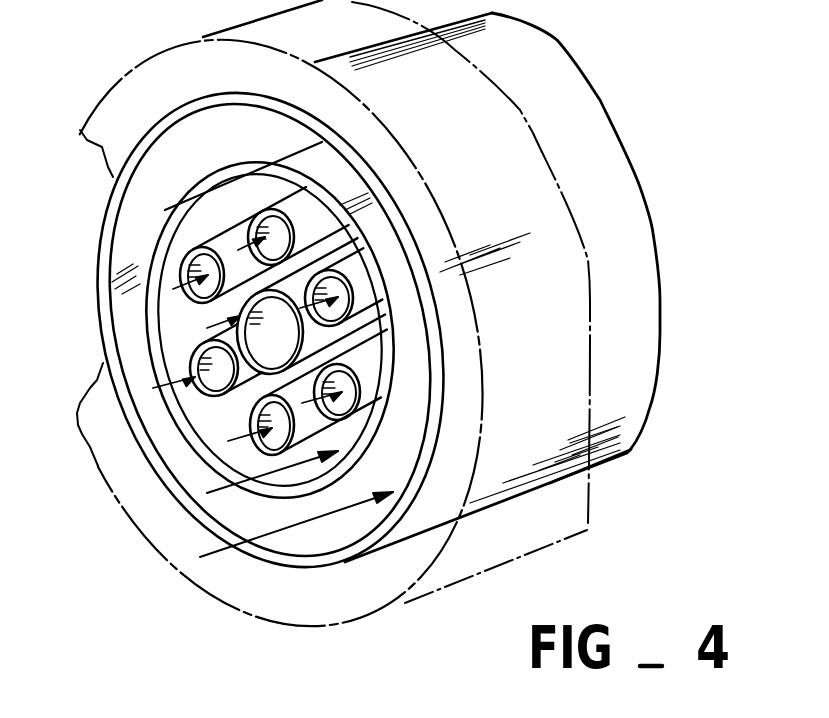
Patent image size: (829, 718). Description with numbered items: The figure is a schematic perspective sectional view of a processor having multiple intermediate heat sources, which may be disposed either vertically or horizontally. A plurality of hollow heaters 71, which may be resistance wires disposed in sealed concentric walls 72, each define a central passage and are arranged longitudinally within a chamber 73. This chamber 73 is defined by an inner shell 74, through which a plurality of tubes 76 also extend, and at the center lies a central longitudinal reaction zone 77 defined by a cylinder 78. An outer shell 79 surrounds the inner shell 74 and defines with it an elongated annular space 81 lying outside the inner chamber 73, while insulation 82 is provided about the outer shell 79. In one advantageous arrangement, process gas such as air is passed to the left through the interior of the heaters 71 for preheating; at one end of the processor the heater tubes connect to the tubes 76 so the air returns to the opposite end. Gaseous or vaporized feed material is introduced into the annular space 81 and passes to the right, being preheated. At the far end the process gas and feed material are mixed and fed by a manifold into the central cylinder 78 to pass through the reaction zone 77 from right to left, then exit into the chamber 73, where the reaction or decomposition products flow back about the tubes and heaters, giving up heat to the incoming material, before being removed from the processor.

The hollow heater 71 is at (295, 218).
The sealed concentric walls 72 is at (250, 220).
The chamber 73 is at (324, 245).
The inner shell 74 is at (282, 165).
The tube 76 is at (188, 254).
The central longitudinal reaction zone 77 is at (288, 350).
The cylinder 78 is at (237, 308).
The outer shell 79 is at (170, 117).
The elongated annular space 81 is at (270, 519).
The insulation 82 is at (597, 337).